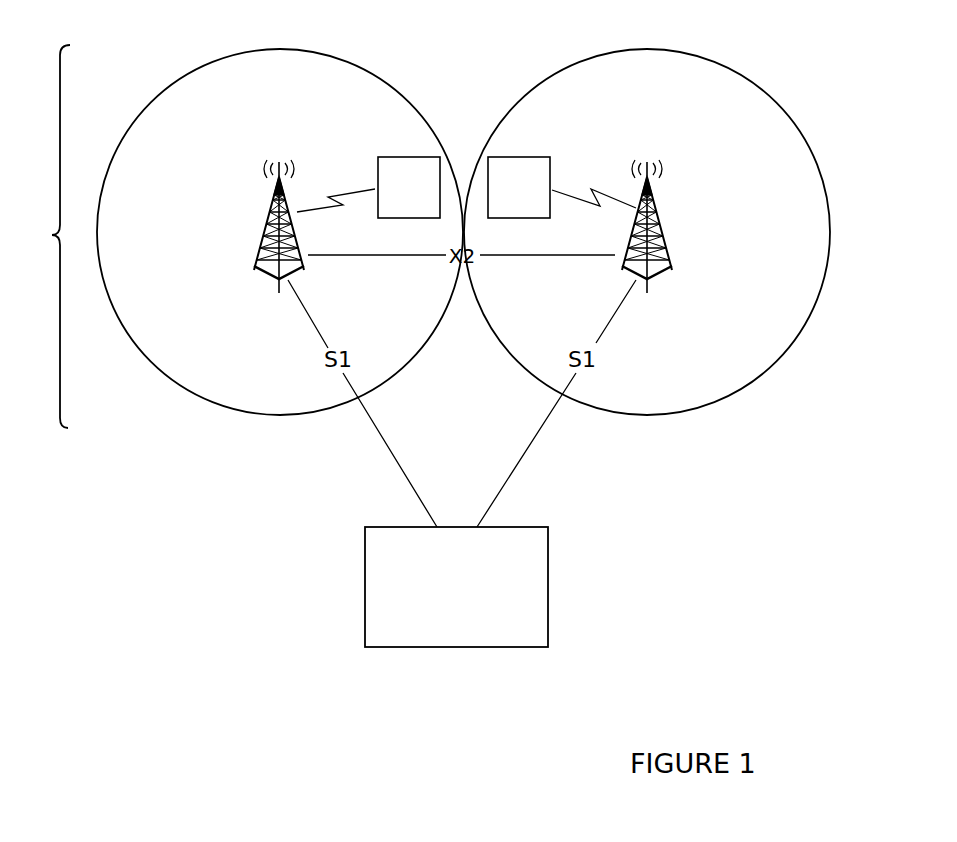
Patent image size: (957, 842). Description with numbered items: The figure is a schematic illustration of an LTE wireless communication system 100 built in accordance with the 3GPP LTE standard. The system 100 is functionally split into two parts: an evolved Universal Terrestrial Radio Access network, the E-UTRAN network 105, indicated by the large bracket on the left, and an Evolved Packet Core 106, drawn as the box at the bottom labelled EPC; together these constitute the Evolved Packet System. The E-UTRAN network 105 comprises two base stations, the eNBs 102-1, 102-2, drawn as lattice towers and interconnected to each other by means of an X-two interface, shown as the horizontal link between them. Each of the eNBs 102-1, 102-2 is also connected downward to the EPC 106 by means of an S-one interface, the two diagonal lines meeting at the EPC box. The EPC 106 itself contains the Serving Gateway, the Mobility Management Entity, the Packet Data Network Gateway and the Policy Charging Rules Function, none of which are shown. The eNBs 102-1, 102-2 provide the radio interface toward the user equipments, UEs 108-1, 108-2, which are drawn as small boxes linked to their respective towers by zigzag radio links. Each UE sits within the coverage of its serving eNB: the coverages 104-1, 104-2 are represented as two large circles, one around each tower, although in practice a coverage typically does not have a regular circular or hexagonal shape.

The system 100 is at (158, 577).
The eNB 102-1 is at (263, 237).
The eNB 102-2 is at (665, 245).
The coverage 104-1 is at (350, 63).
The coverage 104-2 is at (730, 67).
The E-UTRAN network 105 is at (40, 236).
The Evolved Packet Core (EPC) 106 is at (548, 555).
The UE 108-1 is at (410, 157).
The UE 108-2 is at (525, 157).